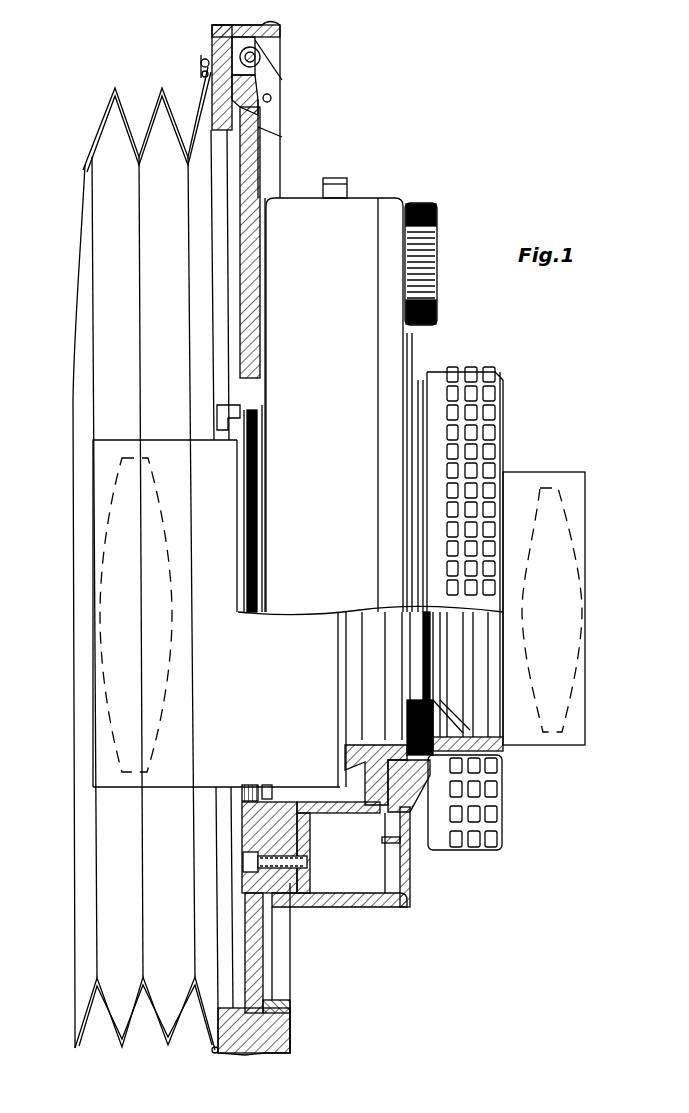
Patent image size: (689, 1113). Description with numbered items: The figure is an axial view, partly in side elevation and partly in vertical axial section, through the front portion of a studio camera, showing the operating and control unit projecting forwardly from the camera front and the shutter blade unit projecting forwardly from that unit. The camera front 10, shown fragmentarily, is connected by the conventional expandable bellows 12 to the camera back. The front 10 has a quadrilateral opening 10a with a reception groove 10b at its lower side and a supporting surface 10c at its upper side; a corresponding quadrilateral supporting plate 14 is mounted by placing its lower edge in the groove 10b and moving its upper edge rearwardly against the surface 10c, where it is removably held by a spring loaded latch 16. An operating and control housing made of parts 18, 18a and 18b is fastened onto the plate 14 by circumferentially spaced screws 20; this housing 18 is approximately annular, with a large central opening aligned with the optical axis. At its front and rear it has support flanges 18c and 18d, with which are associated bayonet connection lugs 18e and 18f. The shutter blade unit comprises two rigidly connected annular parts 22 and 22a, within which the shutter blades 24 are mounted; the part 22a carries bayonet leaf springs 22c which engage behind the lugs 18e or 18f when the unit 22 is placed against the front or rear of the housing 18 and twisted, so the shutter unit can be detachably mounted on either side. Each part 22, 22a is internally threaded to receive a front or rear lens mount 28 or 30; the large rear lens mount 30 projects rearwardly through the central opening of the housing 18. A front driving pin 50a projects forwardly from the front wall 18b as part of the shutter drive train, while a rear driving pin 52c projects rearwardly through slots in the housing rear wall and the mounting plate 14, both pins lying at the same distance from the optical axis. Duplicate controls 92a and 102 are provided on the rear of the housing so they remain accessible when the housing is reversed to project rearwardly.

The camera front 10 is at (292, 1043).
The quadrilateral opening 10a is at (233, 163).
The reception groove 10b is at (275, 1003).
The supporting surface 10c is at (237, 117).
The expandable bellows 12 is at (162, 1035).
The supporting plate 14 is at (252, 165).
The spring loaded latch 16 is at (281, 120).
The operating and control housing 18 is at (350, 908).
The housing part 18a is at (262, 833).
The front wall of housing 18b is at (412, 905).
The front support flange 18c is at (420, 805).
The rear support flange 18d is at (250, 790).
The front bayonet connection lug 18e is at (370, 822).
The rear bayonet connection lug 18f is at (267, 785).
The screws 20 is at (245, 880).
The shutter blade housing part 22 is at (476, 850).
The shutter blade housing part 22a is at (352, 745).
The bayonet leaf springs 22c is at (372, 808).
The shutter blades 24 is at (430, 648).
The front lens mount 28 is at (566, 746).
The rear lens mount 30 is at (100, 762).
The front driving pin 50a is at (427, 375).
The rear driving pin 52c is at (222, 425).
The duplicate control 92a is at (336, 184).
The duplicate control 102 is at (424, 203).